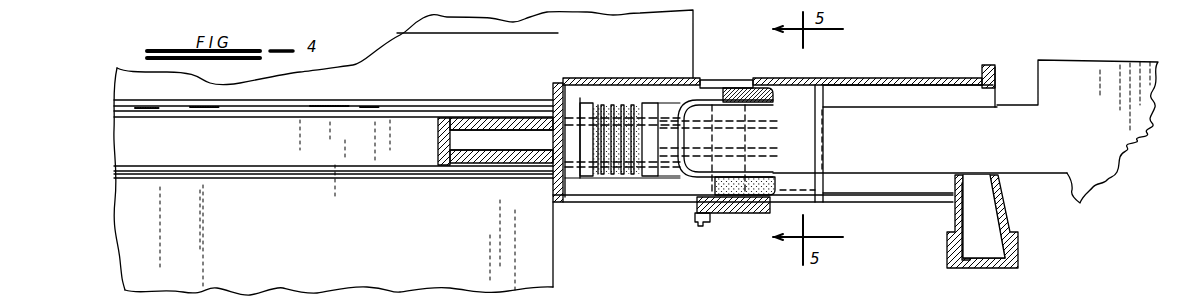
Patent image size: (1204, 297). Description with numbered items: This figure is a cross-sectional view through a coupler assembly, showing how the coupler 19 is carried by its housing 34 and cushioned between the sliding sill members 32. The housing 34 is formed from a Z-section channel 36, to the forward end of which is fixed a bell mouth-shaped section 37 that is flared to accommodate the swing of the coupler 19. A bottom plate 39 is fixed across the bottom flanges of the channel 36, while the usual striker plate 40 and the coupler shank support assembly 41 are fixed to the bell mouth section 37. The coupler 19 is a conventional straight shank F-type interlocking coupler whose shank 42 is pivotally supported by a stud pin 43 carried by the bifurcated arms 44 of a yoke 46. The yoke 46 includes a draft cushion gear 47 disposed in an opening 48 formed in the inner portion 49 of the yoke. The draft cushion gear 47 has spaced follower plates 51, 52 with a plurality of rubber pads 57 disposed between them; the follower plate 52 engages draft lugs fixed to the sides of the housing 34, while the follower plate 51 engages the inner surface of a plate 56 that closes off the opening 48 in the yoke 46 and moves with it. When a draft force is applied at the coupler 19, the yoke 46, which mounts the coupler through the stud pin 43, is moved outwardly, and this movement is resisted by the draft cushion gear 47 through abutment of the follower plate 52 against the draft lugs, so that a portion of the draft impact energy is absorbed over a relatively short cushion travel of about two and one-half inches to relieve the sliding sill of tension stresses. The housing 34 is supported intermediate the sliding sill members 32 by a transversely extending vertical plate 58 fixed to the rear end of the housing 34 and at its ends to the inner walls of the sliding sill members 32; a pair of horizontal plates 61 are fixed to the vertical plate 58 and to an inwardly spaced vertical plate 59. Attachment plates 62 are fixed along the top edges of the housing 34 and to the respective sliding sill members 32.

The coupler 19 is at (1097, 152).
The sliding sill members 32 is at (285, 152).
The housing 34 is at (665, 80).
The Z-section channel 36 is at (662, 203).
The bell mouth-shaped section 37 is at (935, 80).
The bottom plate 39 is at (720, 207).
The striker plate 40 is at (998, 65).
The coupler shank support assembly 41 is at (1010, 212).
The shank 42 is at (950, 157).
The stud pin 43 is at (738, 76).
The bifurcated arms 44 is at (763, 92).
The yoke 46 is at (583, 212).
The draft cushion gear 47 is at (620, 108).
The opening 48 is at (640, 180).
The inner portion 49 is at (598, 187).
The follower plate 51 is at (590, 110).
The follower plate 52 is at (650, 112).
The plate 56 is at (590, 85).
The rubber pads 57 is at (632, 177).
The vertical plate 58 is at (557, 185).
The vertical plate 59 is at (438, 140).
The horizontal plates 61 is at (508, 150).
The attachment plates 62 is at (802, 193).